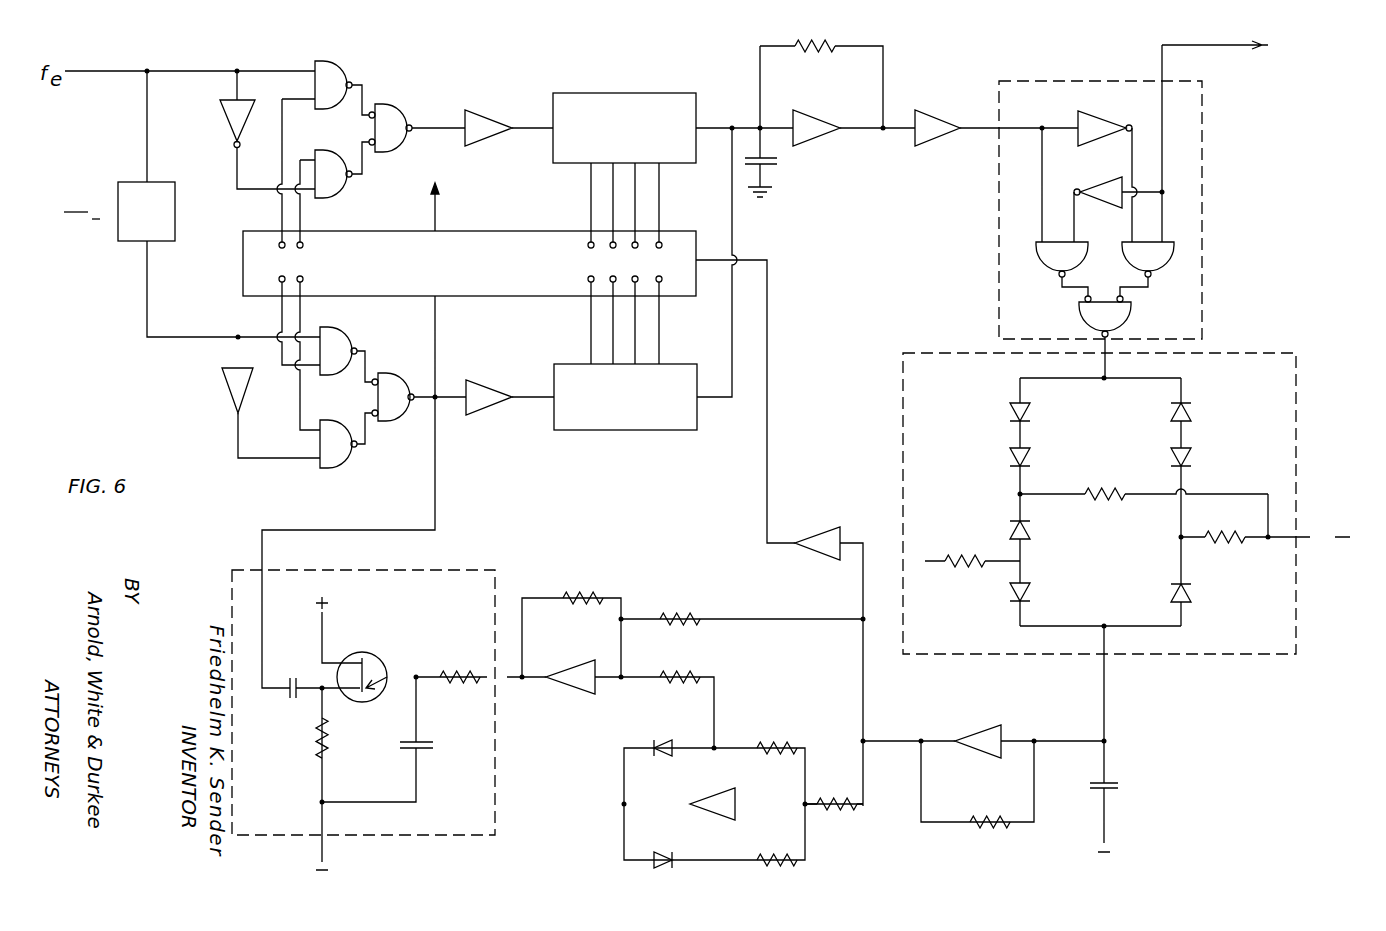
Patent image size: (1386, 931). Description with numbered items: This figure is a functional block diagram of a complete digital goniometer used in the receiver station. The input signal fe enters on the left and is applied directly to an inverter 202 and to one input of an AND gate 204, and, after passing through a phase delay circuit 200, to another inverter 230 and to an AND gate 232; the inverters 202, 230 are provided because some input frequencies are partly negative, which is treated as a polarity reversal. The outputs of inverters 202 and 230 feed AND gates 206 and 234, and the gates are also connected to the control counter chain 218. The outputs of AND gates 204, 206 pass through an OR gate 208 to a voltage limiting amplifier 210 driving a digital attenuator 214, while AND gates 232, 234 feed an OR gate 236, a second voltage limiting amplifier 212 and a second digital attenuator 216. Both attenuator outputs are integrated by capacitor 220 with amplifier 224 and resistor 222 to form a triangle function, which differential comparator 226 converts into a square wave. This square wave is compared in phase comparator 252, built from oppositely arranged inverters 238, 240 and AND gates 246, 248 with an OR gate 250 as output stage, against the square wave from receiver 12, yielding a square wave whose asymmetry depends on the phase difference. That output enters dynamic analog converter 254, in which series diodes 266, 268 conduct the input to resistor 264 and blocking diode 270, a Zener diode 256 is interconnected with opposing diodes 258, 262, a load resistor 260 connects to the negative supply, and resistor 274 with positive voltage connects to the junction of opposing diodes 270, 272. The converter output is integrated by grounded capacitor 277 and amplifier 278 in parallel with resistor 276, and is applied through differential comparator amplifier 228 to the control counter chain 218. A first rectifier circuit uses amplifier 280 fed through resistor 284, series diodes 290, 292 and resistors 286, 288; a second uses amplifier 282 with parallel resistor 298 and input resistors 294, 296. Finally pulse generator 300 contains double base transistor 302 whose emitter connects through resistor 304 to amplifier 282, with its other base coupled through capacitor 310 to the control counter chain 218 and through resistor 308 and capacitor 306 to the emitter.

The receiver 12 is at (1250, 74).
The phase delay circuit 200 is at (122, 245).
The inverter 202 is at (222, 122).
The AND gate 204 is at (330, 62).
The AND gate 206 is at (340, 195).
The OR gate 208 is at (395, 105).
The voltage limiting amplifier 210 is at (478, 108).
The voltage limiting amplifier 212 is at (490, 408).
The digital attenuator 214 is at (617, 92).
The digital attenuator 216 is at (637, 432).
The control counter chain 218 is at (512, 230).
The capacitor 220 is at (780, 170).
The resistor 222 is at (830, 44).
The amplifier 224 is at (825, 140).
The differential comparator 226 is at (942, 110).
The differential comparator amplifier 228 is at (818, 527).
The inverter 230 is at (222, 392).
The AND gate 232 is at (352, 336).
The AND gate 234 is at (338, 470).
The OR gate 236 is at (400, 425).
The inverter 238 is at (1098, 110).
The inverter 240 is at (1100, 180).
The AND gate 246 is at (1045, 270).
The AND gate 248 is at (1165, 265).
The OR gate 250 is at (1120, 322).
The phase comparator 252 is at (1133, 210).
The dynamic analog converter 254 is at (1262, 352).
The Zener diode 256 is at (1192, 415).
The diode 258 is at (1192, 460).
The load resistor 260 is at (1237, 548).
The diode 262 is at (1172, 592).
The resistor 264 is at (1098, 488).
The diode 266 is at (1010, 412).
The diode 268 is at (1010, 457).
The blocking diode 270 is at (1012, 532).
The diode 272 is at (1010, 595).
The resistor 274 is at (962, 565).
The resistor 276 is at (997, 826).
The grounded capacitor 277 is at (1112, 783).
The amplifier 278 is at (980, 727).
The amplifier 280 is at (712, 794).
The amplifier 282 is at (576, 694).
The resistor 284 is at (840, 816).
The resistor 286 is at (806, 870).
The resistor 288 is at (780, 745).
The diode 290 is at (667, 855).
The diode 292 is at (665, 742).
The resistor 294 is at (688, 672).
The resistor 296 is at (686, 617).
The resistor 298 is at (583, 595).
The pulse generator 300 is at (478, 565).
The double base transistor 302 is at (373, 655).
The resistor 304 is at (462, 672).
The capacitor 306 is at (425, 750).
The resistor 308 is at (312, 748).
The capacitor 310 is at (285, 700).